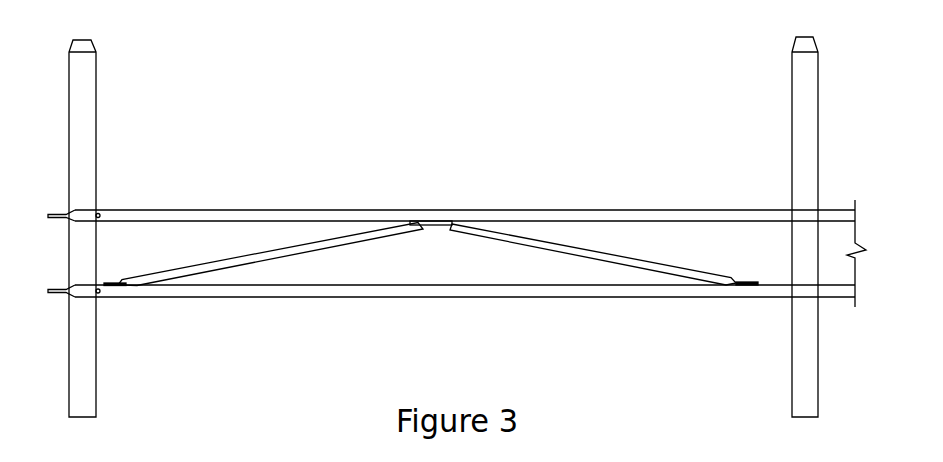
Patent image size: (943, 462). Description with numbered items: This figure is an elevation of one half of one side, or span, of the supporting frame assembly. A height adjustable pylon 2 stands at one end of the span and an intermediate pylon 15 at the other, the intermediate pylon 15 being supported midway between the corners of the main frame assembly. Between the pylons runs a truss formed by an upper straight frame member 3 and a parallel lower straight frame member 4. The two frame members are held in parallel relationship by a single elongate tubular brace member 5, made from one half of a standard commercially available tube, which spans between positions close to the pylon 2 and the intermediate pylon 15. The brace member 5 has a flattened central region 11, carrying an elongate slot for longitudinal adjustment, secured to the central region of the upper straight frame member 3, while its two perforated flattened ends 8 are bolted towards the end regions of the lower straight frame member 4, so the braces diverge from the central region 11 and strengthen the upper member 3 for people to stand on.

The height adjustable pylon 2 is at (89, 126).
The intermediate pylon 15 is at (803, 124).
The upper straight frame member 3 is at (270, 216).
The lower straight frame member 4 is at (243, 290).
The inclined brace member 5 is at (572, 247).
The flattened end 8 is at (111, 297).
The flattened central region 11 is at (433, 221).